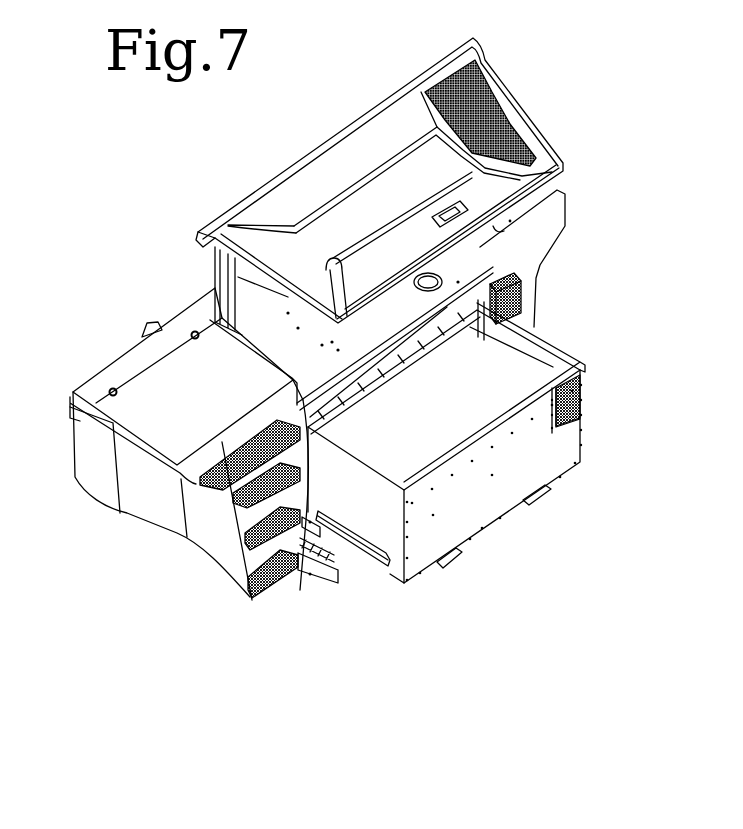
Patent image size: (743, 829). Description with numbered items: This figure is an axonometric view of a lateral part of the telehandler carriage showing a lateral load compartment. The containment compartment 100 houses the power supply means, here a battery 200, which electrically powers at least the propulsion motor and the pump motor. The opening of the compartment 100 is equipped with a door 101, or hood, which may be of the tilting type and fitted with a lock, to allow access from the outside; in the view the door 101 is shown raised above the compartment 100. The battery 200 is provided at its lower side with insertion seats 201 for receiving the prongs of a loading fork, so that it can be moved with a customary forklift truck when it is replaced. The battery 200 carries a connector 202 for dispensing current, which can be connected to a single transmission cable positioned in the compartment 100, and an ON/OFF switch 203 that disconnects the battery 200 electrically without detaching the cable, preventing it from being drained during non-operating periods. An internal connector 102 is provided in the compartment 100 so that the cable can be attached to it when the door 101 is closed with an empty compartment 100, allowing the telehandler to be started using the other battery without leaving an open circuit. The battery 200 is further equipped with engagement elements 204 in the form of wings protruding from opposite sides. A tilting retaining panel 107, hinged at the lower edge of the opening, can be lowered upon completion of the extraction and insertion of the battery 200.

The containment compartment 100 is at (404, 378).
The door 101 is at (333, 166).
The internal connector 102 is at (530, 305).
The tilting retaining panel 107 is at (326, 558).
The battery 200 is at (540, 465).
The insertion seat 201 is at (450, 560).
The connector 202 is at (582, 402).
The ON/OFF switch 203 is at (580, 422).
The engagement element 204 is at (368, 558).